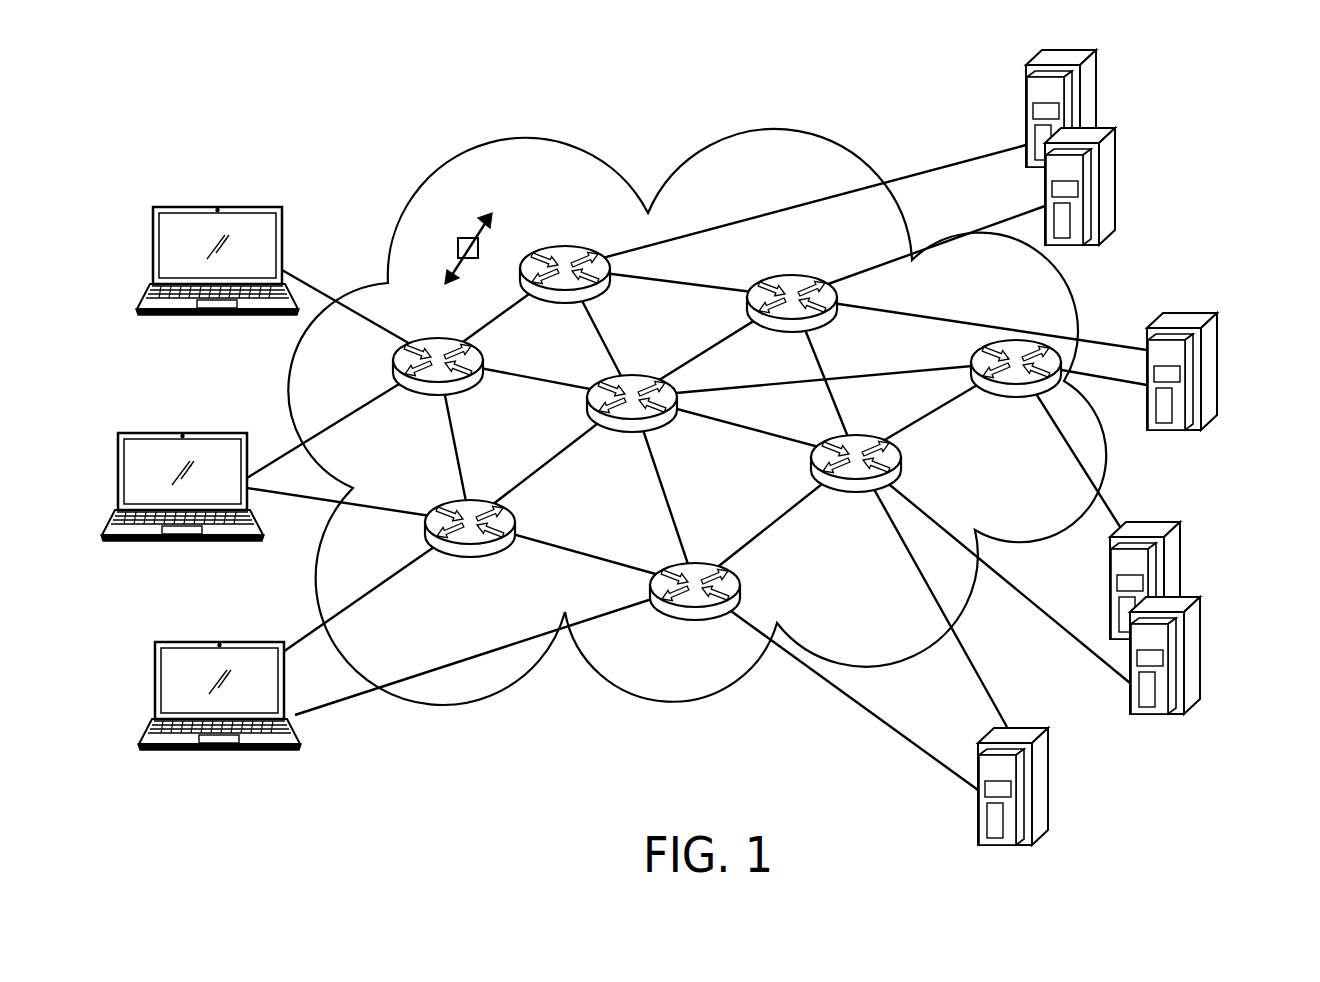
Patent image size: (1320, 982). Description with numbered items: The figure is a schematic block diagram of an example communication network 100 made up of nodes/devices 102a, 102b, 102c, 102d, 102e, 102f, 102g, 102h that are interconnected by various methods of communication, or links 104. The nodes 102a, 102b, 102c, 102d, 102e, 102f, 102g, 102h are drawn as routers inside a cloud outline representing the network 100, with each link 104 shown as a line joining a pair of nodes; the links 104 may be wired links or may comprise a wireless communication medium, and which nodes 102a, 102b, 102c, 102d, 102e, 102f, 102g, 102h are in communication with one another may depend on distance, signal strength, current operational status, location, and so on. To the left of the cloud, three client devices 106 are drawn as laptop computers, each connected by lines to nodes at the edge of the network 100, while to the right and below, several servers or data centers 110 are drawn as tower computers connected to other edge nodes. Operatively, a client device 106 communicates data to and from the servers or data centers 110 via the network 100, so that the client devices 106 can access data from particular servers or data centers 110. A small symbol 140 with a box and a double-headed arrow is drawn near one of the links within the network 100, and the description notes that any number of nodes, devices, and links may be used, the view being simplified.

The communication network 100 is at (802, 130).
The node/device 102a is at (425, 394).
The node/device 102b is at (478, 558).
The node/device 102c is at (585, 247).
The node/device 102d is at (645, 375).
The node/device 102e is at (702, 563).
The node/device 102f is at (806, 276).
The node/device 102g is at (842, 492).
The node/device 102h is at (1010, 398).
The link 104 is at (505, 320).
The client device 106 is at (240, 206).
The server or data center 110 is at (1116, 196).
The packet 140 is at (480, 245).